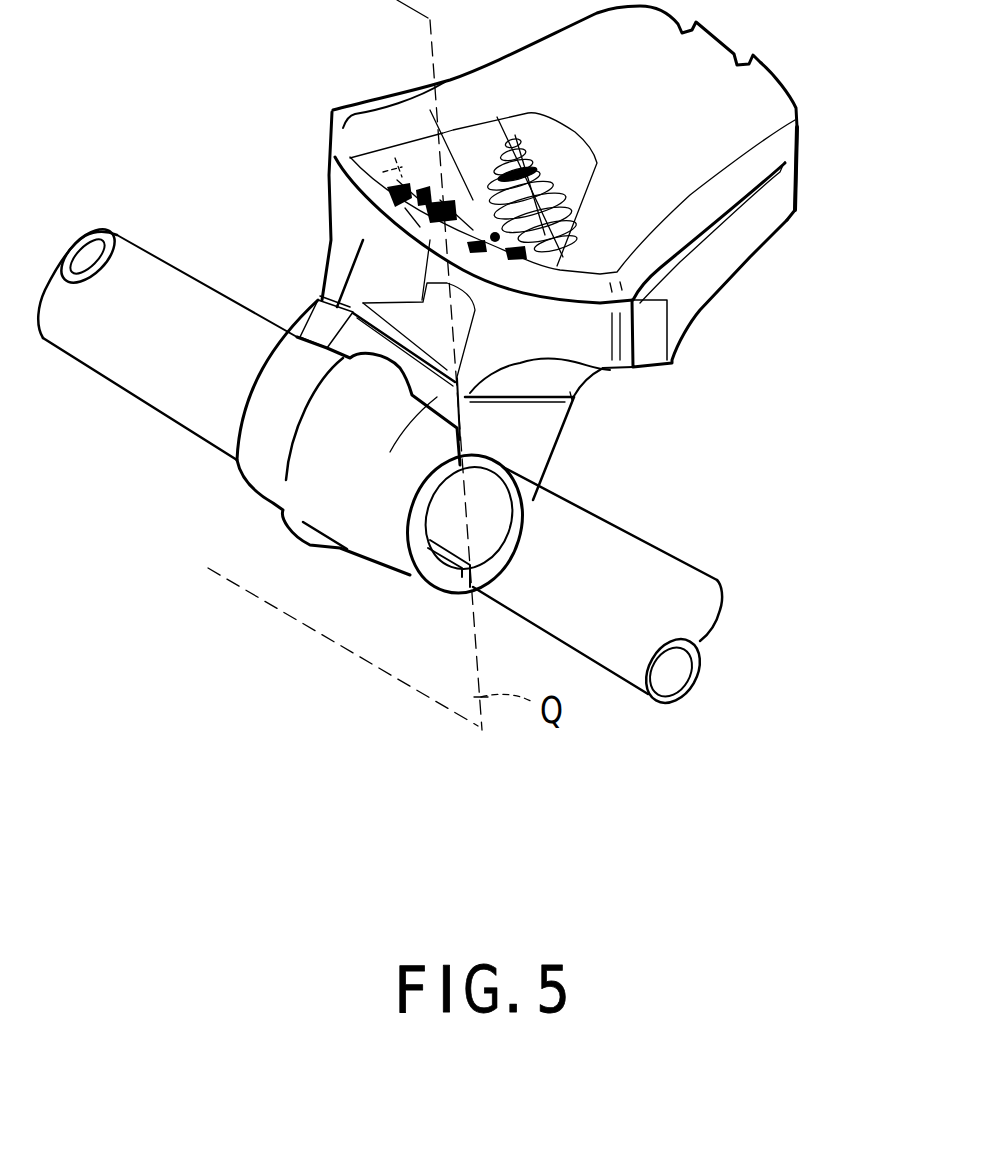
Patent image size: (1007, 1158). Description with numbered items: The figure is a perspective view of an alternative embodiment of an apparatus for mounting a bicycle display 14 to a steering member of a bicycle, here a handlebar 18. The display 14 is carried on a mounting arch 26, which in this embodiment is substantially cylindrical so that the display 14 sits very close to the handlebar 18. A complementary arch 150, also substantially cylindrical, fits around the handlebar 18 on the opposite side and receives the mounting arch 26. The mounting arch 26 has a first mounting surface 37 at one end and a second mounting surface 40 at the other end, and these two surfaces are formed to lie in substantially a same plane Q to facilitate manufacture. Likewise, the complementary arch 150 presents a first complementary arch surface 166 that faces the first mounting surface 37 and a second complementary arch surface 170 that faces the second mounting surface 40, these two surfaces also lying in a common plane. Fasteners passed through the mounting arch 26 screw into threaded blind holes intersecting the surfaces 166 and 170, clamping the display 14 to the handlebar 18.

The bicycle display 14 is at (793, 232).
The handlebar 18 is at (667, 570).
The mounting arch 26 is at (548, 444).
The first mounting surface 37 is at (398, 405).
The second mounting surface 40 is at (430, 548).
The complementary arch 150 is at (252, 484).
The first complementary arch surface 166 is at (462, 443).
The second complementary arch surface 170 is at (463, 556).